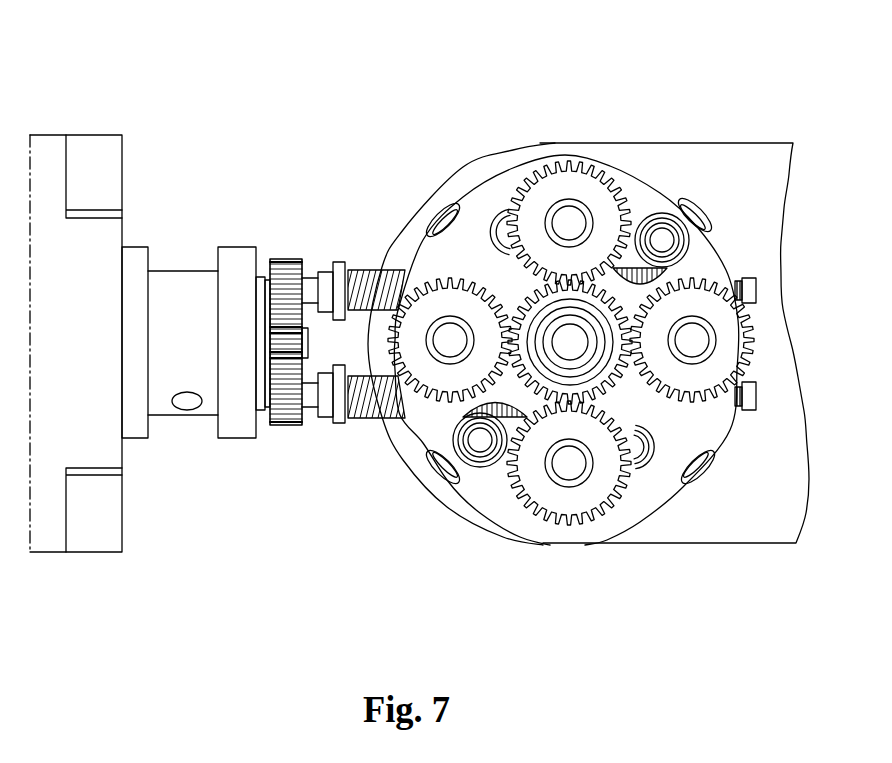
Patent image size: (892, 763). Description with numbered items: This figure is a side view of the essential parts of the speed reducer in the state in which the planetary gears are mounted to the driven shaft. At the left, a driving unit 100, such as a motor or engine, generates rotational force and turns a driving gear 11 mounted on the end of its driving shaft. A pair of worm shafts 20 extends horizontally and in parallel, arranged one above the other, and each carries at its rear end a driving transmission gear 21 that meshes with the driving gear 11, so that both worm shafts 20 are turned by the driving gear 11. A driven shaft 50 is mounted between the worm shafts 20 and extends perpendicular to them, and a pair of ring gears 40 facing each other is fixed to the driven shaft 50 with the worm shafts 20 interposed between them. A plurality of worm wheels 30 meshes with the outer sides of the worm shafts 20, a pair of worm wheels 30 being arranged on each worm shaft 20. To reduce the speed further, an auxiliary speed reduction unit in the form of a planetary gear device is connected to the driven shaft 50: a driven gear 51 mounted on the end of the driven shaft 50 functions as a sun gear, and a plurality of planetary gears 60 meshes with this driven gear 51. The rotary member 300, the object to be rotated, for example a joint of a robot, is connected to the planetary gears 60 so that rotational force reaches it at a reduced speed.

The driving unit 100 is at (52, 145).
The driving gear 11 is at (283, 340).
The driving transmission gear 21 is at (288, 258).
The worm shaft 20 is at (365, 262).
The worm wheel 30 is at (450, 208).
The ring gear 40 is at (483, 203).
The planetary gear 60 is at (588, 190).
The driven shaft 50 is at (572, 348).
The driven gear 51 is at (610, 373).
The rotary member 300 is at (758, 152).